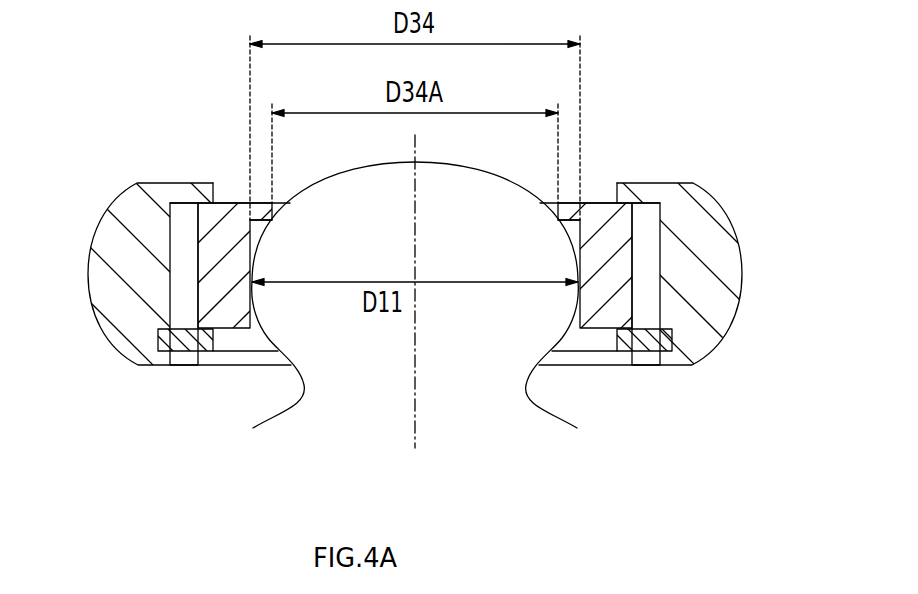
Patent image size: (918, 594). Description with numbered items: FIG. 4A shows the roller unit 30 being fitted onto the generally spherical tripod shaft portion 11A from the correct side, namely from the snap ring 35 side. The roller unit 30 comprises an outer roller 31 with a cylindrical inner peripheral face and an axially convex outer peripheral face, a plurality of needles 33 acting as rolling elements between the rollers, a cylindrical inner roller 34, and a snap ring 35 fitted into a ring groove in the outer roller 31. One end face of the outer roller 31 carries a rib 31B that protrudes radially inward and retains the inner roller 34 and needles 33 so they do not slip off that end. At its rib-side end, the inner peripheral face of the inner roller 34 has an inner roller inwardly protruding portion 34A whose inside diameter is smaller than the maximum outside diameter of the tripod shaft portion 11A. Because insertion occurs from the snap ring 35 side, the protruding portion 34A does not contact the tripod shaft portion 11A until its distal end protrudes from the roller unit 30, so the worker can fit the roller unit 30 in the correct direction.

The roller unit 30 is at (459, 271).
The outer roller 31 is at (140, 280).
The rib 31B is at (183, 192).
The needles 33 is at (185, 314).
The inner roller 34 is at (227, 257).
The inner roller inwardly protruding portion 34A is at (258, 223).
The snap ring 35 is at (200, 352).
The tripod shaft portion 11A is at (473, 398).